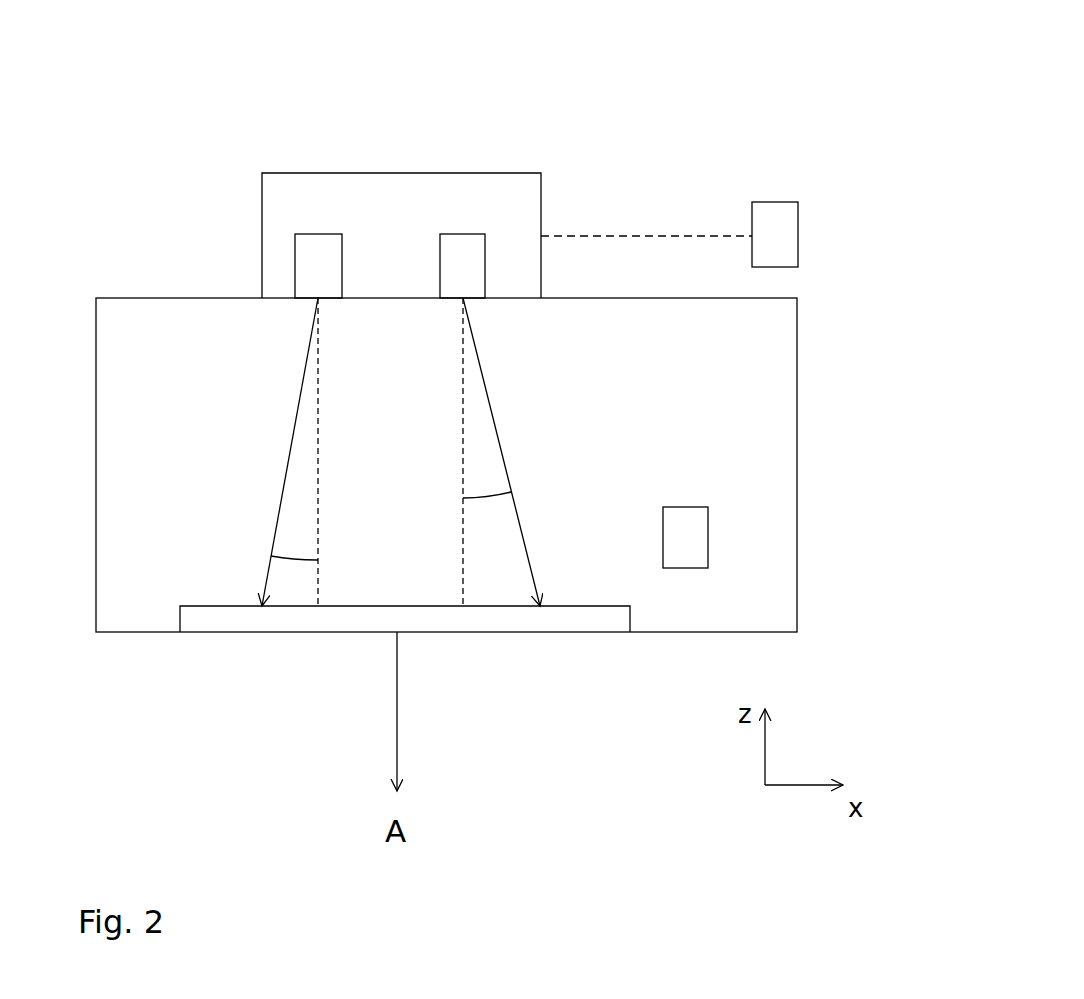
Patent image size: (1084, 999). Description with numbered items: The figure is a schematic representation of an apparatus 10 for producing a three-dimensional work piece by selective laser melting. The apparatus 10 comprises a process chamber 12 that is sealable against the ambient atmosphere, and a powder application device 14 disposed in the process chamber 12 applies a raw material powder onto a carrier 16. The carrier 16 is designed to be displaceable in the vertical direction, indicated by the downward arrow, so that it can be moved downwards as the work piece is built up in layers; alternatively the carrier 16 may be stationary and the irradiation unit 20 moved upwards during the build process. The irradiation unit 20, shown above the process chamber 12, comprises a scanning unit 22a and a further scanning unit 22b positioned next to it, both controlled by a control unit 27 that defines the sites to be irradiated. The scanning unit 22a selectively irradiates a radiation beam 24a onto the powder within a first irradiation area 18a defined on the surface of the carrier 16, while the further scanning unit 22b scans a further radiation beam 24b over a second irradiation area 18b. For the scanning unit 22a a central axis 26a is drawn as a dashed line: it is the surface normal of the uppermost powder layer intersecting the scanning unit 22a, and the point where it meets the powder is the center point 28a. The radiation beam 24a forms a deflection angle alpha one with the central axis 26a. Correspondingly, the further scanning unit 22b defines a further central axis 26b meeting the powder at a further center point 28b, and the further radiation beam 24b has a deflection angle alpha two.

The apparatus 10 is at (633, 145).
The process chamber 12 is at (753, 340).
The powder application device 14 is at (682, 535).
The carrier 16 is at (613, 596).
The first irradiation area 18a is at (232, 606).
The second irradiation area 18b is at (575, 605).
The irradiation unit 20 is at (512, 202).
The scanning unit 22a is at (315, 245).
The further scanning unit 22b is at (463, 250).
The radiation beam 24a is at (288, 460).
The further radiation beam 24b is at (495, 430).
The central axis 26a is at (320, 512).
The further central axis 26b is at (462, 596).
The control unit 27 is at (770, 225).
The center point 28a is at (318, 612).
The further center point 28b is at (465, 612).